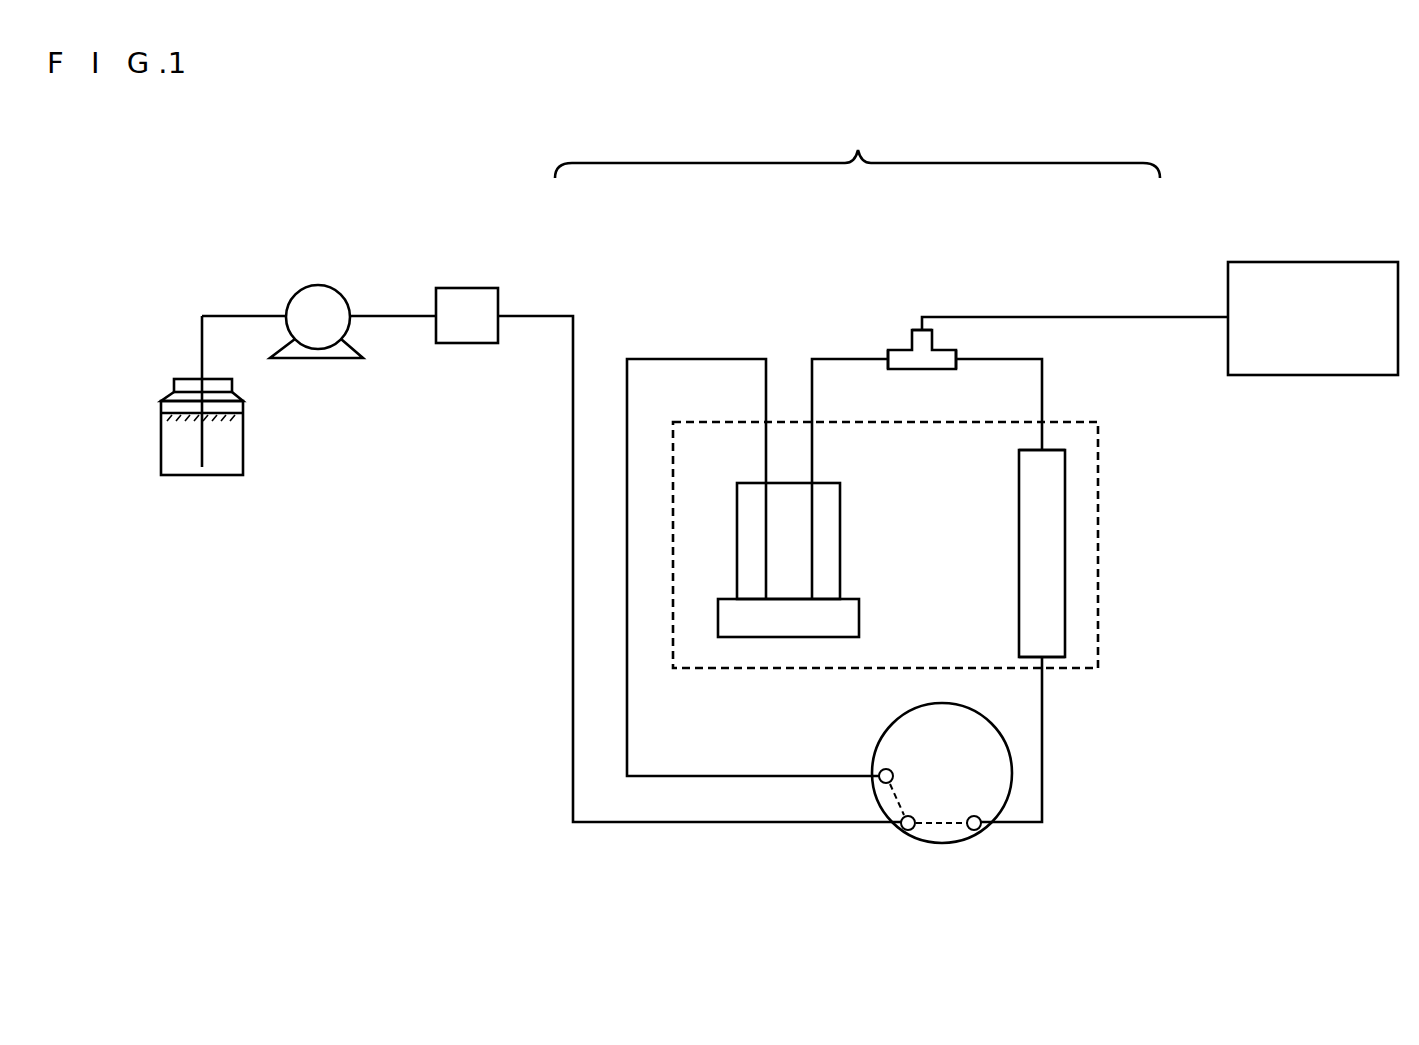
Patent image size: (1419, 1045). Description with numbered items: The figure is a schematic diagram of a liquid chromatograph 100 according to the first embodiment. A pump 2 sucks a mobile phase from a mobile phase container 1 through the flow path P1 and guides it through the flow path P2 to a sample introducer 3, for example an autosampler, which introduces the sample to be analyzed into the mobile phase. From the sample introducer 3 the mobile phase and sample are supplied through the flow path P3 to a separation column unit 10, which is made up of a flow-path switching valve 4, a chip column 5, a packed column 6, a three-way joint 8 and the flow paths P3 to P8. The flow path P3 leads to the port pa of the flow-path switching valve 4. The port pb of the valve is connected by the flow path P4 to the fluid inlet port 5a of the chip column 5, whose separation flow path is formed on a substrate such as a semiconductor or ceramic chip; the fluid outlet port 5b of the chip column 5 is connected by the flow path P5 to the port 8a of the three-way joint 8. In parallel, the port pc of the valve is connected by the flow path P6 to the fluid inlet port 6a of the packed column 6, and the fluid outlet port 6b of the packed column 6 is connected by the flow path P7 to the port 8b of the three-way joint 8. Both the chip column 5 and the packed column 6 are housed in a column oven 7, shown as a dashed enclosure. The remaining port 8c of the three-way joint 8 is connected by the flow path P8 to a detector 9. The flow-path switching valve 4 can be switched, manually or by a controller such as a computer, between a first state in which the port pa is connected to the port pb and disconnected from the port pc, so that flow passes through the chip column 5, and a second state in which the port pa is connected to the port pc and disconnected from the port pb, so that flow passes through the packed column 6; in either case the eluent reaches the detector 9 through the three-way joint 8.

The liquid chromatograph 100 is at (1363, 178).
The separation column unit 10 is at (857, 143).
The mobile phase container 1 is at (196, 378).
The pump 2 is at (307, 288).
The sample introducer 3 is at (468, 288).
The flow-path switching valve 4 is at (945, 845).
The chip column 5 is at (842, 540).
The fluid inlet port 5a is at (766, 482).
The fluid outlet port 5b is at (808, 482).
The packed column 6 is at (1018, 540).
The fluid inlet port 6a is at (1045, 660).
The fluid outlet port 6b is at (1062, 450).
The column oven 7 is at (1100, 531).
The three-way joint 8 is at (912, 350).
The port 8a is at (890, 352).
The port 8b is at (957, 362).
The port 8c is at (921, 330).
The detector 9 is at (1272, 262).
The flow path P1 is at (222, 312).
The flow path P2 is at (412, 312).
The flow path P3 is at (530, 312).
The flow path P4 is at (684, 776).
The flow path P5 is at (812, 418).
The flow path P6 is at (1044, 806).
The flow path P7 is at (1043, 407).
The flow path P8 is at (1072, 315).
The port pa is at (906, 832).
The port pb is at (878, 770).
The port pc is at (979, 832).